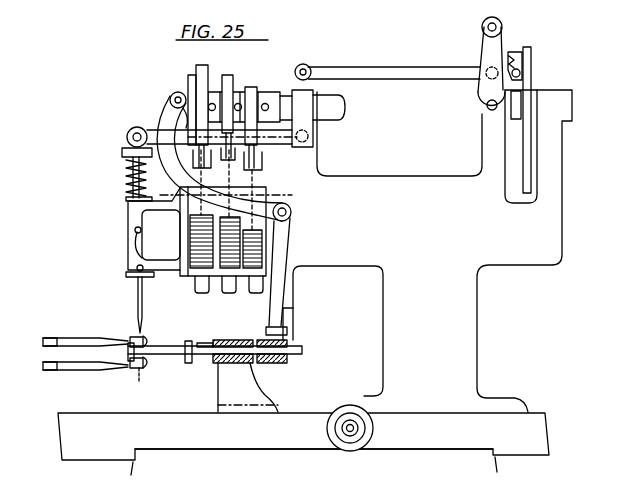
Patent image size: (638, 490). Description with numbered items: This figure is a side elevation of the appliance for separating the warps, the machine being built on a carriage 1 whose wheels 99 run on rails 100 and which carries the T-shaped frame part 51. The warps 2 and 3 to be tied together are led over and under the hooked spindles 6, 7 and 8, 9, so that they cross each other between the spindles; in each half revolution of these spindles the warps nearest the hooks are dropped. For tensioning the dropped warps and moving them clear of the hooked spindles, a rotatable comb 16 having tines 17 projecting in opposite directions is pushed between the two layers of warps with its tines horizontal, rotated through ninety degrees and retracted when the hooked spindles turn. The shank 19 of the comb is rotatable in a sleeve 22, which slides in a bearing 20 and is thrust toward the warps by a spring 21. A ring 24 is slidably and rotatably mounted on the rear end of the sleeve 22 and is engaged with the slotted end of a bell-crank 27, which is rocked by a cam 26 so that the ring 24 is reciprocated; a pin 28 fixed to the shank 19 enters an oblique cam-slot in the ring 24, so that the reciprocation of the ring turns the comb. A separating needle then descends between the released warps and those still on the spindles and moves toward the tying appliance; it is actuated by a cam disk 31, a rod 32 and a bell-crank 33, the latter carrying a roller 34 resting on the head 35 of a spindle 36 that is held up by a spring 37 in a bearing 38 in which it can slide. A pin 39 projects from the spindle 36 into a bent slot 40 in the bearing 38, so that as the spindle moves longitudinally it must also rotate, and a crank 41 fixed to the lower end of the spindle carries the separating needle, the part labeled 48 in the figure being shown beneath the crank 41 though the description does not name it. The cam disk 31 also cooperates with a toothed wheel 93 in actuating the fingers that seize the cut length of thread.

The carriage 1 is at (543, 429).
The rails 100 is at (428, 456).
The wheels 99 is at (375, 431).
The T-shaped frame part 51 is at (472, 358).
The cam disk 31 is at (513, 50).
The rod 32 is at (410, 80).
The toothed wheel 93 is at (532, 59).
The cam 26 is at (194, 70).
The bell-crank 33 is at (153, 128).
The roller 34 is at (137, 127).
The head 35 is at (122, 153).
The spindle 36 is at (126, 180).
The spring 37 is at (142, 171).
The bearing 38 is at (128, 223).
The pin 39 is at (134, 244).
The bent slot 40 is at (148, 249).
The crank 41 is at (130, 277).
The needle 48 is at (144, 298).
The bell-crank 27 is at (287, 233).
The pin 28 is at (287, 333).
The shank 19 is at (163, 352).
The spring 21 is at (195, 364).
The sleeve 22 is at (300, 347).
The ring 24 is at (288, 362).
The bearing 20 is at (260, 394).
The warp 2 is at (131, 338).
The warp 3 is at (131, 369).
The tines 17 is at (128, 350).
The rotatable comb 16 is at (139, 370).
The spindle 6 is at (66, 338).
The spindle 7 is at (47, 338).
The spindle 8 is at (73, 371).
The spindle 9 is at (46, 371).